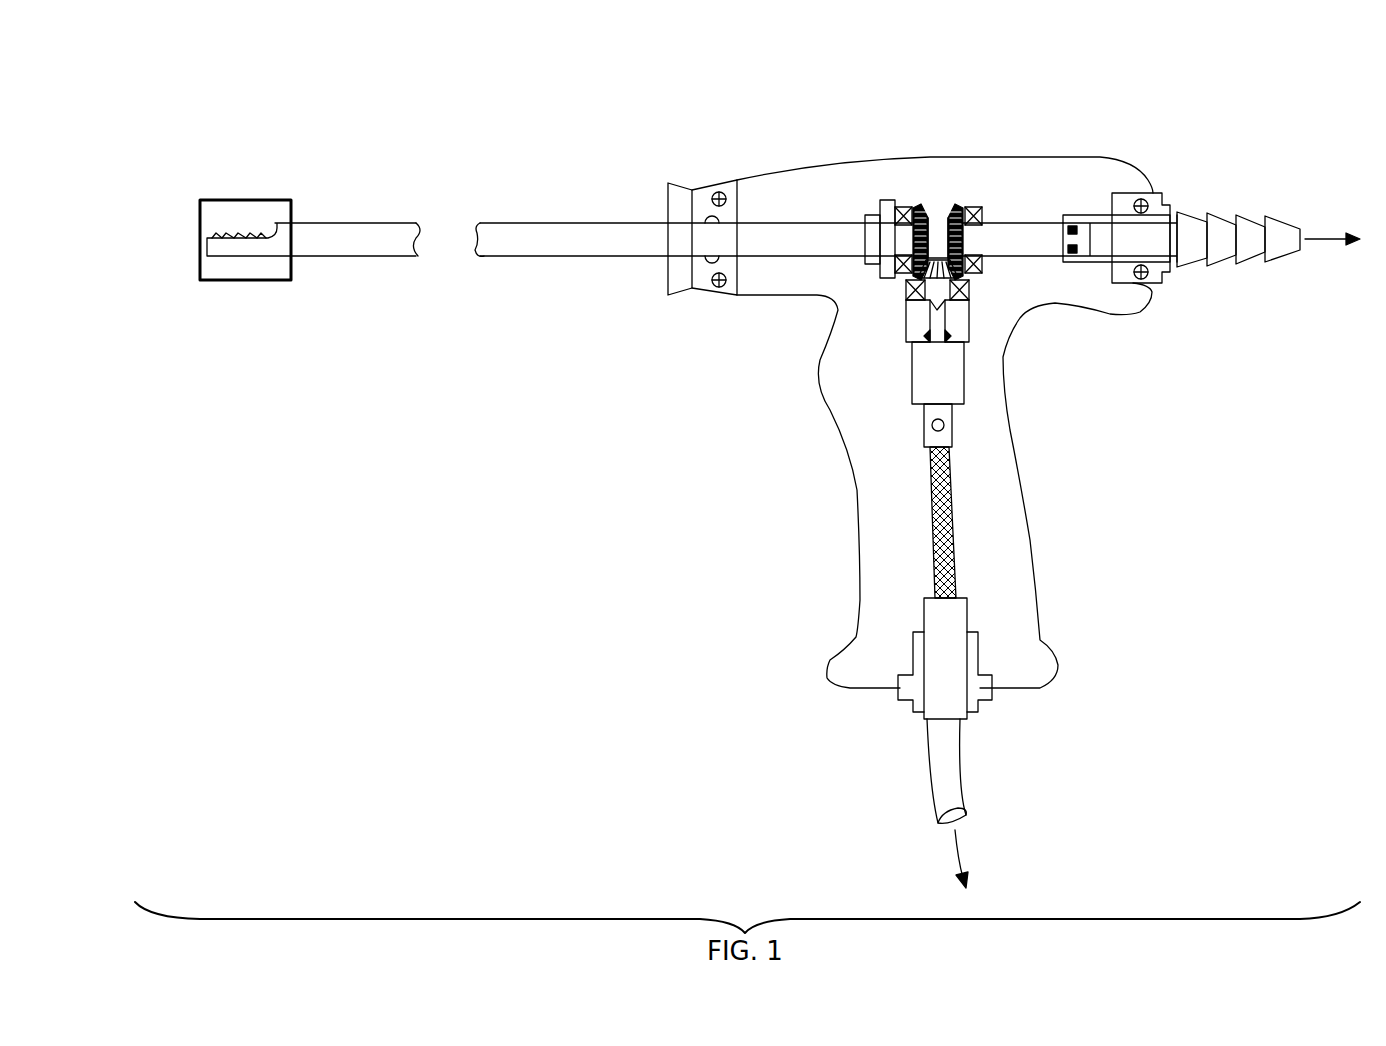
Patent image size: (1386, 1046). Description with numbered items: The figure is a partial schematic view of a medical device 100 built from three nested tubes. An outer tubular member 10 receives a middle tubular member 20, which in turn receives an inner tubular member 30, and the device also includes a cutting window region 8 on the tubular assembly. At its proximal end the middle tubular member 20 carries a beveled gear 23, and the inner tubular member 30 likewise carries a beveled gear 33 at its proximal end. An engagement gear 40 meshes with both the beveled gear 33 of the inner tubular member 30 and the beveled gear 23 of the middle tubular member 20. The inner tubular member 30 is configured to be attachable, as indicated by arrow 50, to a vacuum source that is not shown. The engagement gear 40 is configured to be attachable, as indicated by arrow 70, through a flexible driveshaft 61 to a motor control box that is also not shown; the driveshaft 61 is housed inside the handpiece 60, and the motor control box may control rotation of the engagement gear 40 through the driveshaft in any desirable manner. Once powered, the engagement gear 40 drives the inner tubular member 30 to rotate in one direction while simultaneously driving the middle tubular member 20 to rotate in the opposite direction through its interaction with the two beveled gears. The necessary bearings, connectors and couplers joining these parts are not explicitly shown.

The medical device 100 is at (350, 94).
The cutting window region 8 is at (233, 200).
The outer tubular member 10 is at (536, 244).
The middle tubular member 20 is at (902, 240).
The beveled gear 23 is at (936, 245).
The inner tubular member 30 is at (945, 245).
The beveled gear 33 is at (962, 215).
The engagement gear 40 is at (912, 305).
The arrow 50 is at (1330, 241).
The handpiece 60 is at (1004, 357).
The flexible driveshaft 61 is at (949, 517).
The arrow 70 is at (960, 847).